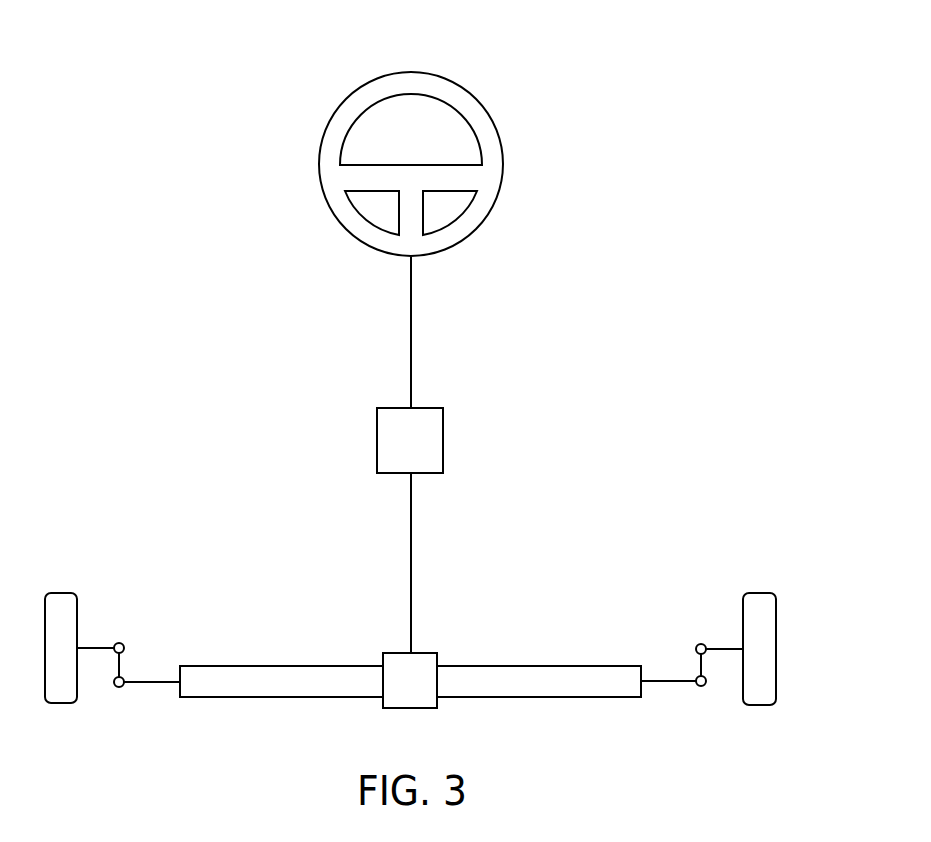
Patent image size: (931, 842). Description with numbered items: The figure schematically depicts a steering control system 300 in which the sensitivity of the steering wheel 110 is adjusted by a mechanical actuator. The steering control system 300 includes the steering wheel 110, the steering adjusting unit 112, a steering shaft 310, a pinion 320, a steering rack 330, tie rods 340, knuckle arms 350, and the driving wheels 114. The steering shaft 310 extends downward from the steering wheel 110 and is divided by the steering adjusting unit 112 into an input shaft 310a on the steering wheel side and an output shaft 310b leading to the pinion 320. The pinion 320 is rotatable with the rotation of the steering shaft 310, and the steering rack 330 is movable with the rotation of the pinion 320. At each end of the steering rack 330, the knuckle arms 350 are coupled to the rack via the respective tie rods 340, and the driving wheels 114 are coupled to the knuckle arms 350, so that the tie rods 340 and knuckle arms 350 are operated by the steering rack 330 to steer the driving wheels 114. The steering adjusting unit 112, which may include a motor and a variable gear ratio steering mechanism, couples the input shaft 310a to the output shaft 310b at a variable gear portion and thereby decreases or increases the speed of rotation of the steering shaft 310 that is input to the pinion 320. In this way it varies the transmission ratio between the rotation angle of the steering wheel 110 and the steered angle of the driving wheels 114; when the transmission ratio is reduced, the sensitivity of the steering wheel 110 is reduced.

The steering wheel 110 is at (411, 72).
The steering adjusting unit 112 is at (443, 440).
The driving wheels 114 is at (62, 593).
The steering control system 300 is at (590, 173).
The steering shaft 310 is at (318, 353).
The input shaft 310a is at (411, 338).
The output shaft 310b is at (411, 542).
The pinion 320 is at (431, 653).
The steering rack 330 is at (540, 666).
The tie rods 340 is at (150, 683).
The knuckle arms 350 is at (100, 648).